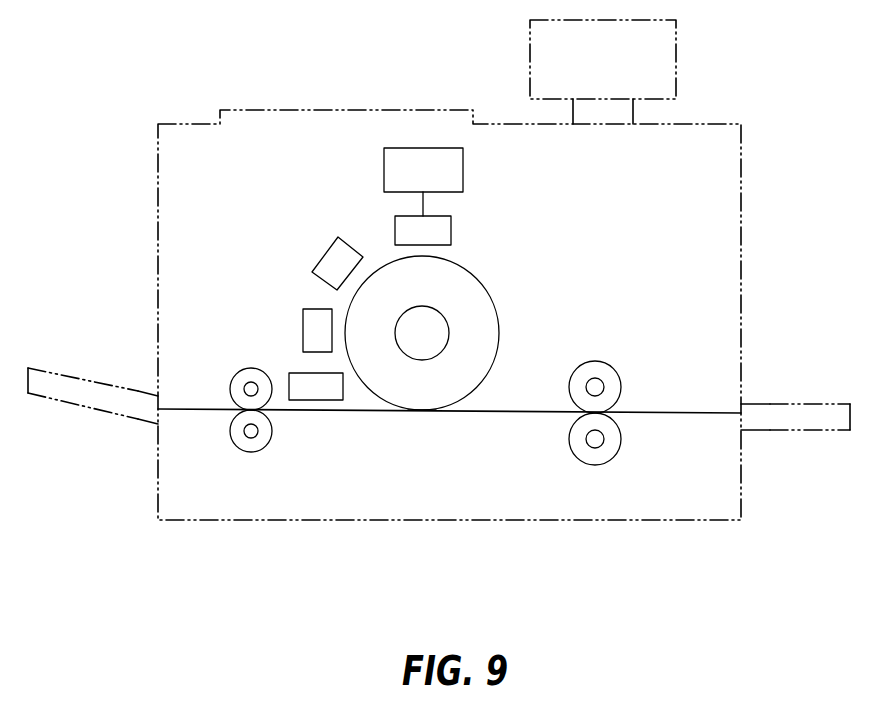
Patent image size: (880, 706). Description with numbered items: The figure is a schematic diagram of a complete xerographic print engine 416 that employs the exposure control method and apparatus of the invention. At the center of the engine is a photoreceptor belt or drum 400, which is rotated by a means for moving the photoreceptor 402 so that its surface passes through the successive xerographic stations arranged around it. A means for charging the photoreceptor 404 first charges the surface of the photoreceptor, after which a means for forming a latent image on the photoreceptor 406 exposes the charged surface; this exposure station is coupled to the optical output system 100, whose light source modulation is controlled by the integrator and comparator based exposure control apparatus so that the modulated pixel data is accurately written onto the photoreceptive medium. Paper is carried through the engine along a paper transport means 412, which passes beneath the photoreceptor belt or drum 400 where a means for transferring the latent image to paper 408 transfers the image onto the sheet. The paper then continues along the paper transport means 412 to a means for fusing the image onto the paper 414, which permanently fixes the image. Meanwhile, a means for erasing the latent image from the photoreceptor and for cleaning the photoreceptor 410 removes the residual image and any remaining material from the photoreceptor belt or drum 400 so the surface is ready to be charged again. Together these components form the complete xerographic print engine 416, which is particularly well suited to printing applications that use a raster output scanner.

The optical output system 100 is at (463, 170).
The photoreceptor belt or drum 400 is at (500, 333).
The means for moving the photoreceptor 402 is at (450, 333).
The means for charging the photoreceptor 404 is at (322, 255).
The means for forming a latent image on the photoreceptor 406 is at (451, 230).
The means for transferring the latent image to paper 408 is at (422, 411).
The means for erasing the latent image from the photoreceptor and for cleaning the p 410 is at (302, 332).
The paper transport means 412 is at (513, 413).
The means for fusing the image onto the paper 414 is at (315, 400).
The xerographic print engine 416 is at (700, 204).